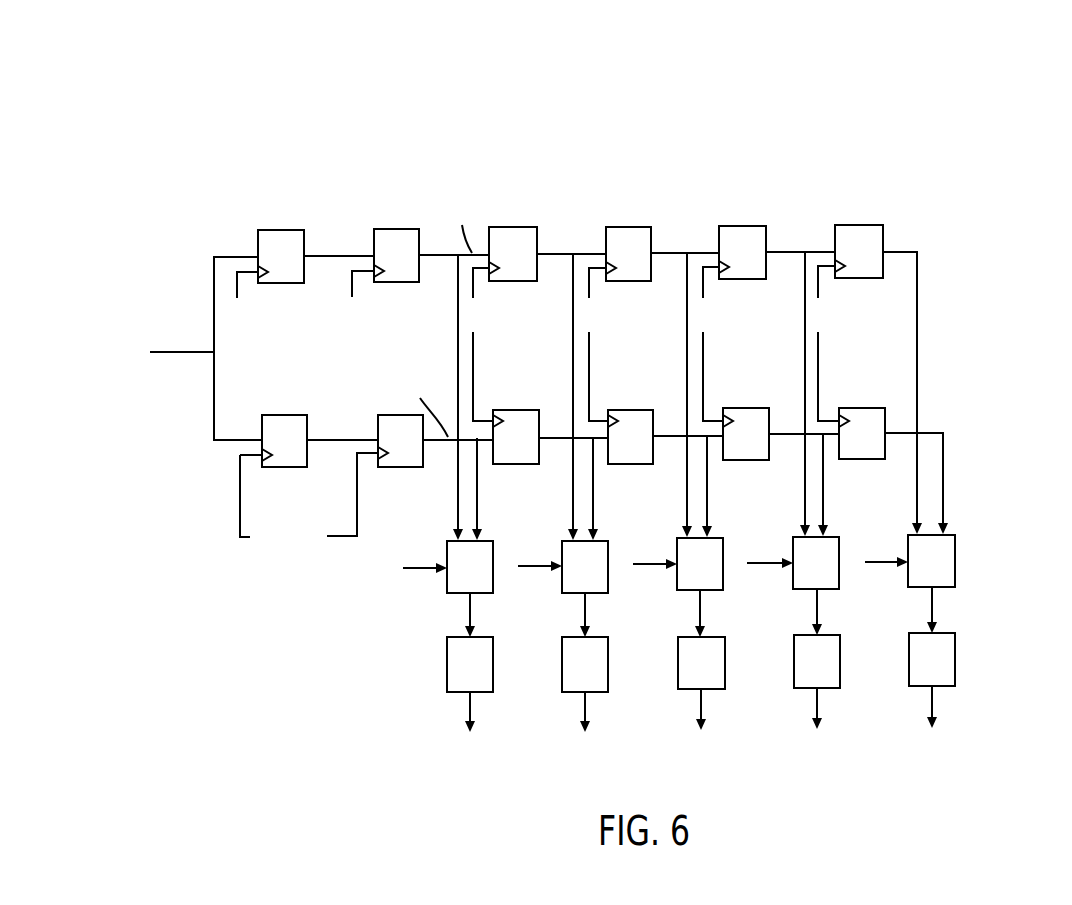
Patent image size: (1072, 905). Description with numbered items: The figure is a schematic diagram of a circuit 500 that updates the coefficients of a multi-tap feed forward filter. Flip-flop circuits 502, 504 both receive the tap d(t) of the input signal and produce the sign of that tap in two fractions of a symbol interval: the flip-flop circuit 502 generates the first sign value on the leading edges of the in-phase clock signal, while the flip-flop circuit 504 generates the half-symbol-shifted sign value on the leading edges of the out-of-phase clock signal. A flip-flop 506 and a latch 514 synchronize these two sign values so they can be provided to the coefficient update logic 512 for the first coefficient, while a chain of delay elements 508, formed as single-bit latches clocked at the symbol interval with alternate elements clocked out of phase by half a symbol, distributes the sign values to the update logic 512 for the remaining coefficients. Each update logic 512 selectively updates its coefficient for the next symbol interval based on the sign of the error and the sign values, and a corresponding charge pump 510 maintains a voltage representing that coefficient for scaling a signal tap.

The circuit 500 is at (978, 118).
The flip-flop circuit 502 is at (292, 230).
The flip-flop circuit 504 is at (280, 467).
The flip-flop 506 is at (406, 229).
The delay elements 508 is at (518, 227).
The charge pump 510 is at (447, 674).
The coefficient update logic 512 is at (445, 585).
The latch 514 is at (398, 467).